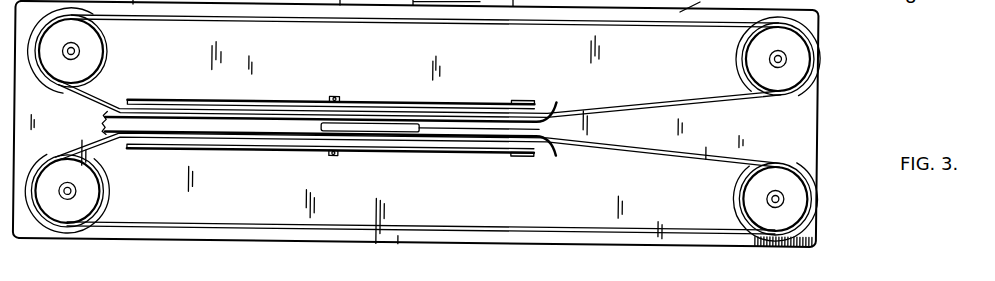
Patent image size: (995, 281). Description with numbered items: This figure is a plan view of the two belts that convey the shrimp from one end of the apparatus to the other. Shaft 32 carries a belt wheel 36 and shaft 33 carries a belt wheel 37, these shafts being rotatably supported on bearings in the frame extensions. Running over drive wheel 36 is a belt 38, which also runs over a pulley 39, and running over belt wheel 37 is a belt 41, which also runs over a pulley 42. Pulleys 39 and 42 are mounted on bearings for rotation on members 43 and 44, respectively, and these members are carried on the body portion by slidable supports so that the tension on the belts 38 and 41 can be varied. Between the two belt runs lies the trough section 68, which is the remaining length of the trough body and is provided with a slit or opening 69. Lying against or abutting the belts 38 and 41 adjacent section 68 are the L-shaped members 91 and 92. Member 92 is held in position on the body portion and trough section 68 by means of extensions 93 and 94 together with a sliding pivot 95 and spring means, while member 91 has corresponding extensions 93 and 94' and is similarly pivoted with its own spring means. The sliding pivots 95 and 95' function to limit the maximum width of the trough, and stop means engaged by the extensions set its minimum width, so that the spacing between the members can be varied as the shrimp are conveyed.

The shaft 32 is at (67, 55).
The shaft 33 is at (75, 189).
The belt wheel 36 is at (106, 54).
The belt wheel 37 is at (103, 200).
The belt 38 is at (305, 15).
The pulley 39 is at (748, 58).
The belt 41 is at (422, 221).
The pulley 42 is at (745, 201).
The member 43 is at (778, 57).
The member 44 is at (786, 190).
The trough section 68 is at (465, 124).
The slit or opening 69 is at (385, 124).
The L-shaped member 91 is at (283, 101).
The L-shaped member 92 is at (292, 146).
The extension 93 is at (208, 98).
The extension 94 is at (506, 169).
The extension 94' is at (525, 87).
The sliding pivot 95 is at (350, 167).
The sliding pivot 95' is at (350, 86).